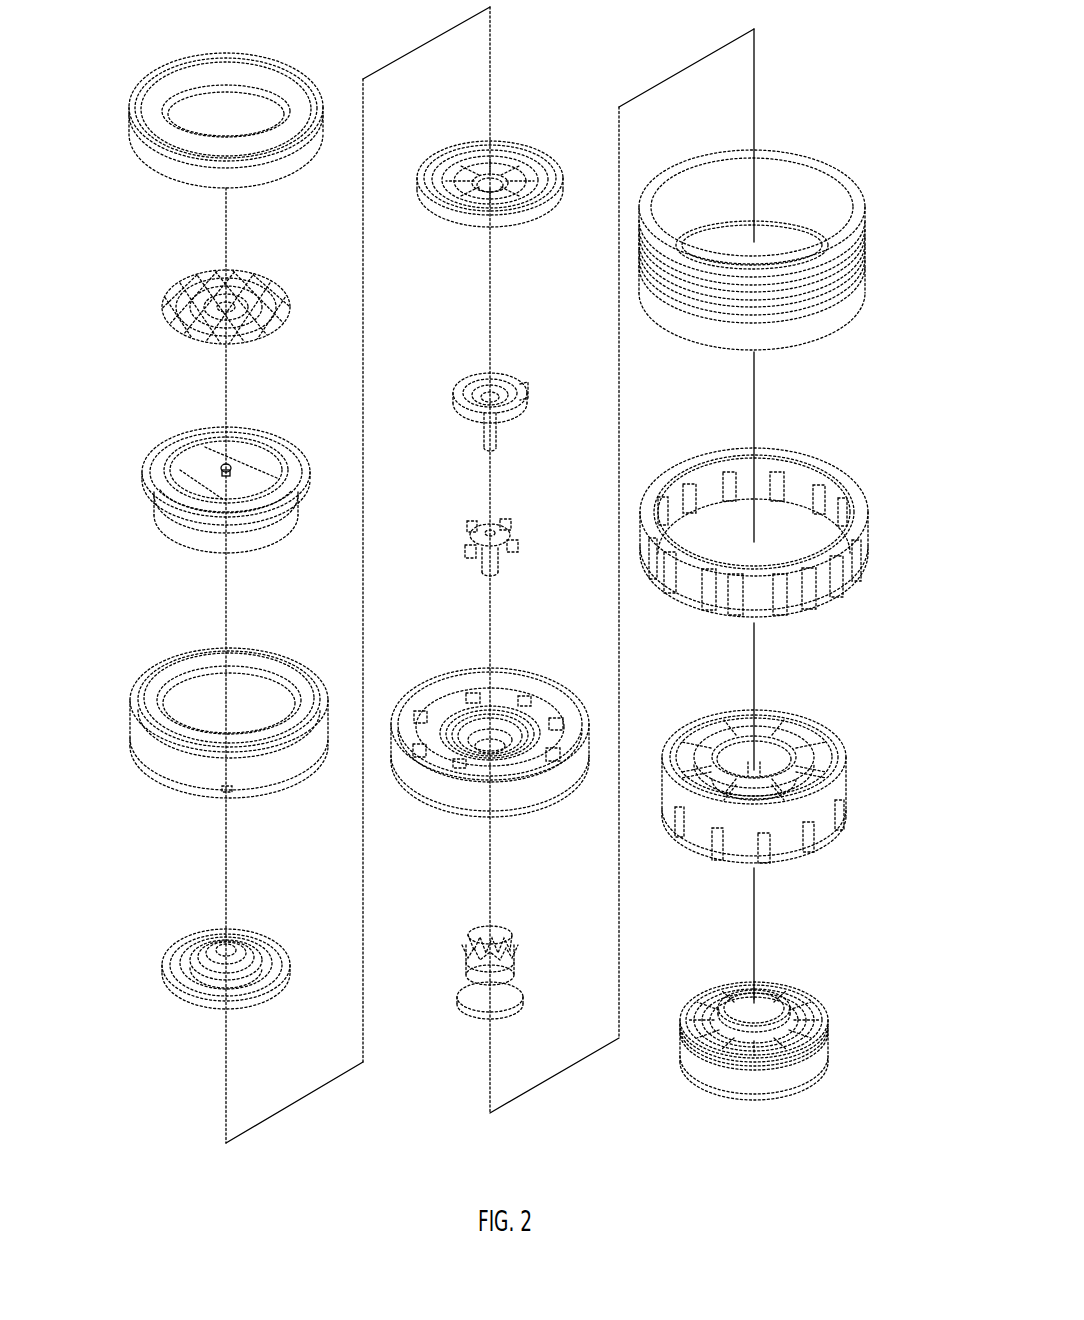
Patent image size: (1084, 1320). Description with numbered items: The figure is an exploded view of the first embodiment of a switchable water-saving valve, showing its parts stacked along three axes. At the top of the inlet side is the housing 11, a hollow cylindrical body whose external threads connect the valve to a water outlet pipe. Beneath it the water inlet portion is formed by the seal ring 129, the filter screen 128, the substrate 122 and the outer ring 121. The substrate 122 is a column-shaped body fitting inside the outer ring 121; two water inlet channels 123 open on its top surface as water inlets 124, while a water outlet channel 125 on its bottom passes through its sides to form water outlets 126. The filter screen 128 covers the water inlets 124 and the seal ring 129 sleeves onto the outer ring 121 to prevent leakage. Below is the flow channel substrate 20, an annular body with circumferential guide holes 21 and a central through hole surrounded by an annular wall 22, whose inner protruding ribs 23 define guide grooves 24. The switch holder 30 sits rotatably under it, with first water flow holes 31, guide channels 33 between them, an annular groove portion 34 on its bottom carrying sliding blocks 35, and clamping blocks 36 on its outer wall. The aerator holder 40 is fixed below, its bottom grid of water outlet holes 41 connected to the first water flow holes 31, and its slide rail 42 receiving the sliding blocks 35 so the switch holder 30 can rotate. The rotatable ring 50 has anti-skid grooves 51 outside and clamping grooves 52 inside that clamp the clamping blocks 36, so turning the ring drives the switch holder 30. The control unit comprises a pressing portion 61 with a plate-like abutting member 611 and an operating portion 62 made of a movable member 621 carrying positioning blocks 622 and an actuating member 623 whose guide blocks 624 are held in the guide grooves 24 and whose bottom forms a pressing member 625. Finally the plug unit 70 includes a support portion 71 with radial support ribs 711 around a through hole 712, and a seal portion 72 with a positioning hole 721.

The housing 11 is at (862, 280).
The flow channel substrate 20 is at (496, 737).
The guide holes 21 is at (566, 722).
The annular wall 22 is at (515, 742).
The protruding ribs 23 is at (505, 750).
The guide grooves 24 is at (462, 746).
The switch holder 30 is at (769, 787).
The first water flow holes 31 is at (783, 735).
The guide channels 33 is at (790, 795).
The annular groove portion 34 is at (735, 762).
The sliding blocks 35 is at (748, 745).
The clamping blocks 36 is at (768, 852).
The aerator holder 40 is at (767, 1048).
The water outlet holes 41 is at (785, 1050).
The slide rail 42 is at (700, 1086).
The rotatable ring 50 is at (759, 532).
The anti-skid grooves 51 is at (825, 592).
The clamping grooves 52 is at (812, 490).
The pressing portion 61 is at (510, 399).
The abutting member 611 is at (512, 385).
The operating portion 62 is at (491, 990).
The movable member 621 is at (491, 548).
The positioning blocks 622 is at (509, 539).
The actuating member 623 is at (515, 976).
The guide blocks 624 is at (512, 930).
The pressing member 625 is at (463, 1006).
The plug unit 70 is at (238, 949).
The support portion 71 is at (500, 169).
The support ribs 711 is at (525, 181).
The through hole 712 is at (481, 180).
The seal portion 72 is at (191, 1005).
The positioning hole 721 is at (258, 985).
The outer ring 121 is at (141, 740).
The substrate 122 is at (221, 483).
The water inlet channels 123 is at (250, 452).
The water inlets 124 is at (270, 455).
The water outlet channel 125 is at (277, 522).
The water outlets 126 is at (262, 530).
The filter screen 128 is at (288, 306).
The seal ring 129 is at (292, 170).